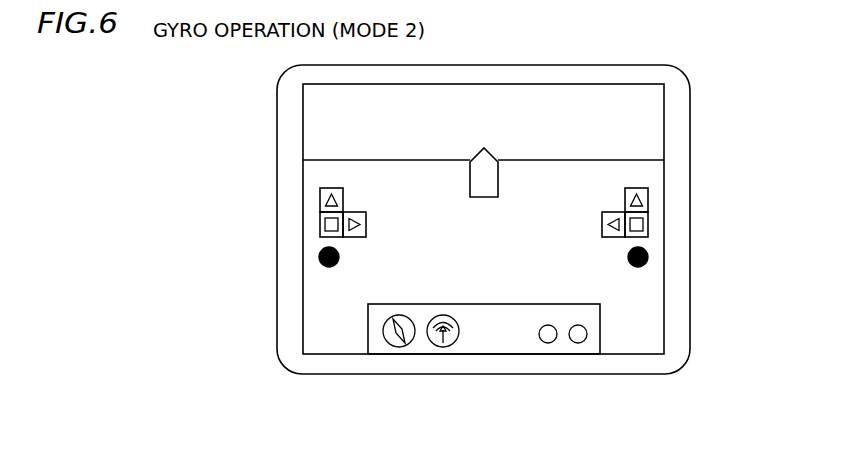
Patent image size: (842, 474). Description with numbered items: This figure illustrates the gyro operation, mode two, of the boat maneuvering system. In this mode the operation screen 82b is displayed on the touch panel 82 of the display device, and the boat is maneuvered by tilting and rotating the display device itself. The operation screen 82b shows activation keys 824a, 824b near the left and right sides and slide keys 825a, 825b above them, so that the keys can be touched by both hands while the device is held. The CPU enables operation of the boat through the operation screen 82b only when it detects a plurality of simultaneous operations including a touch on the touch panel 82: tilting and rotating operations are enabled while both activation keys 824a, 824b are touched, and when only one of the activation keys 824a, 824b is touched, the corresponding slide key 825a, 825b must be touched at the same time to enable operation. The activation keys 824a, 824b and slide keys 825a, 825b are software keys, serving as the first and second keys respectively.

The touch panel 82 is at (645, 146).
The operation screen 82b is at (645, 328).
The activation key 824a is at (318, 255).
The activation key 824b is at (648, 255).
The slide key 825a is at (320, 222).
The slide key 825b is at (649, 222).